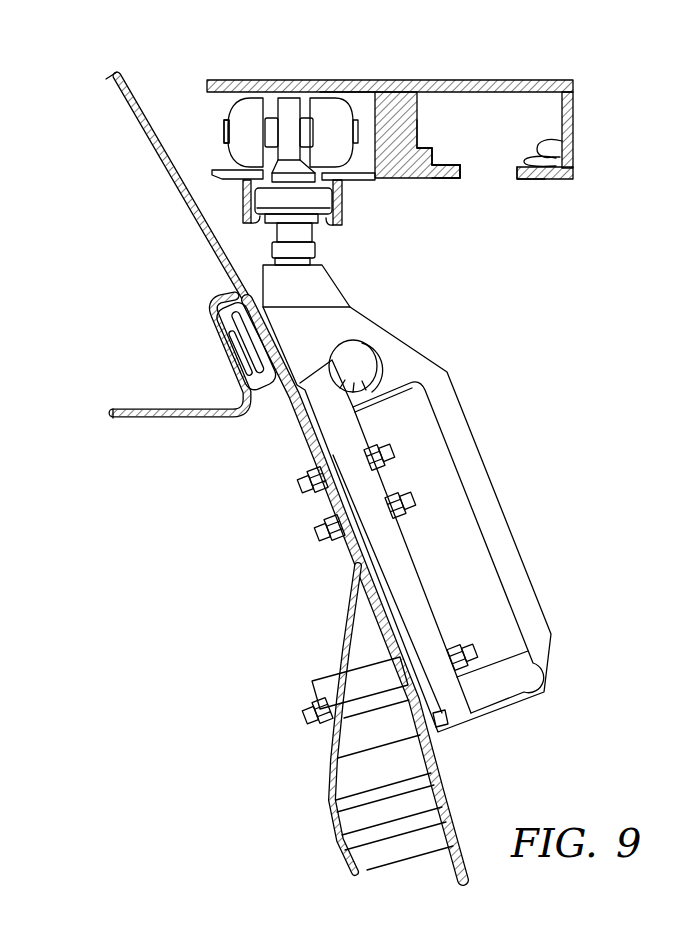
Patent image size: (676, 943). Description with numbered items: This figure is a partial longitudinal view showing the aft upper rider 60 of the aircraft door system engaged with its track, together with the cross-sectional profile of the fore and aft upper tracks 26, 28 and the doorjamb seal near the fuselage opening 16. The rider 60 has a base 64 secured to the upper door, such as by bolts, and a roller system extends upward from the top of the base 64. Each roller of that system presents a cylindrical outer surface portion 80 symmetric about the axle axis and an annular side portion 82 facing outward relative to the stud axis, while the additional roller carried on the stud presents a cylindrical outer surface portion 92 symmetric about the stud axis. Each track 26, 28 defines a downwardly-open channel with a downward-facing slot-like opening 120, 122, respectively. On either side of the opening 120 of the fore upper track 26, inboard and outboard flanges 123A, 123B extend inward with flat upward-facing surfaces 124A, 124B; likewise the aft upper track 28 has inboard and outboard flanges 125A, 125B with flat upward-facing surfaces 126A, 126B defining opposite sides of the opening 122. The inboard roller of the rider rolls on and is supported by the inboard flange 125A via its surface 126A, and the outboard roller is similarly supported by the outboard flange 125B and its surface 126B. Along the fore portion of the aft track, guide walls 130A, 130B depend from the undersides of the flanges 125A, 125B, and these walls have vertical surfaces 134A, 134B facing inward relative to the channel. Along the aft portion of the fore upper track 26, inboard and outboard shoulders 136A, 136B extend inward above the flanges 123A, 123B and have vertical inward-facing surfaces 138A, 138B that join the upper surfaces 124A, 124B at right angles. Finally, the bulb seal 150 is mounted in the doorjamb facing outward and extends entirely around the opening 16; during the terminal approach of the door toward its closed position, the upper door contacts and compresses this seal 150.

The opening 16 is at (316, 572).
The fore upper track 26 is at (548, 104).
The aft upper track 28 is at (362, 99).
The aft upper rider 60 is at (463, 380).
The base 64 is at (330, 297).
The cylindrical outer surface portion 80 is at (296, 72).
The annular side portion 82 is at (355, 168).
The cylindrical outer surface portion 92 is at (256, 200).
The opening 120 is at (498, 175).
The opening 122 is at (331, 182).
The inboard flange 123A is at (460, 178).
The outboard flange 123B is at (545, 179).
The upward-facing surface 124A is at (458, 172).
The upward-facing surface 124B is at (568, 173).
The inboard flange 125A is at (216, 172).
The outboard flange 125B is at (375, 176).
The upward-facing surface 126A is at (256, 171).
The upward-facing surface 126B is at (378, 170).
The guide wall 130A is at (243, 212).
The guide wall 130B is at (341, 222).
The vertical surface 134A is at (257, 228).
The vertical surface 134B is at (337, 228).
The inboard shoulder 136A is at (425, 148).
The outboard shoulder 136B is at (552, 162).
The vertical inward-facing surface 138A is at (431, 162).
The vertical inward-facing surface 138B is at (545, 147).
The bulb seal 150 is at (272, 387).